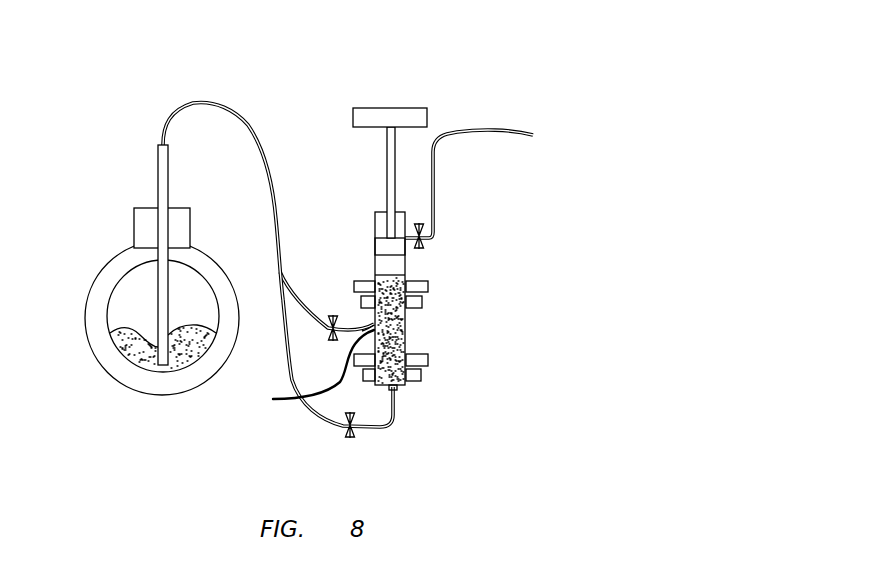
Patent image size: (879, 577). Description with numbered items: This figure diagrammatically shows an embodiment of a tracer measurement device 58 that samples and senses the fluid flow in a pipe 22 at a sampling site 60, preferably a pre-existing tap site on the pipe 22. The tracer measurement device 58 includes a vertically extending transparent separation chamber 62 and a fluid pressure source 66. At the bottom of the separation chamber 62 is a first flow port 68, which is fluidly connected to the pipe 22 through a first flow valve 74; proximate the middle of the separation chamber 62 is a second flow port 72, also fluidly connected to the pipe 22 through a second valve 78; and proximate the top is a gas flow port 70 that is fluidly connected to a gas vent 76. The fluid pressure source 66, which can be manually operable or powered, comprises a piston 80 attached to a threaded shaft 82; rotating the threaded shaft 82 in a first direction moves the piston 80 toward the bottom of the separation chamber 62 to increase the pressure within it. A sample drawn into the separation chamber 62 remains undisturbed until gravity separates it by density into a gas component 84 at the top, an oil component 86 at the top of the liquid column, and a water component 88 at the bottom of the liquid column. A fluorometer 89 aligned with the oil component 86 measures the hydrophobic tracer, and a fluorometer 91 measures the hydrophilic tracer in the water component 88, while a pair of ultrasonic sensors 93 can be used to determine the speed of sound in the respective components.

The pipe 22 is at (136, 396).
The tracer measurement device 58 is at (296, 99).
The sampling site 60 is at (157, 256).
The separation chamber 62 is at (426, 337).
The fluid pressure source 66 is at (392, 85).
The first flow port 68 is at (402, 392).
The gas flow port 70 is at (417, 222).
The second flow port 72 is at (309, 372).
The first flow valve 74 is at (353, 438).
The gas vent 76 is at (508, 128).
The second valve 78 is at (332, 316).
The piston 80 is at (386, 243).
The threaded shaft 82 is at (386, 172).
The gas component 84 is at (407, 261).
The oil component 86 is at (375, 336).
The water component 88 is at (316, 412).
The fluorometer 89 is at (428, 286).
The fluorometer 91 is at (428, 358).
The ultrasonic sensors 93 is at (423, 303).